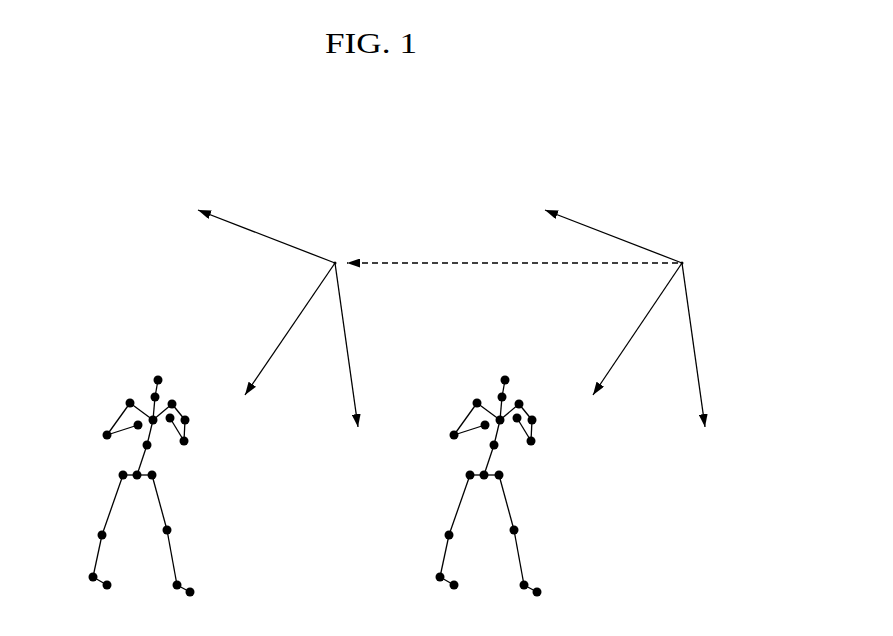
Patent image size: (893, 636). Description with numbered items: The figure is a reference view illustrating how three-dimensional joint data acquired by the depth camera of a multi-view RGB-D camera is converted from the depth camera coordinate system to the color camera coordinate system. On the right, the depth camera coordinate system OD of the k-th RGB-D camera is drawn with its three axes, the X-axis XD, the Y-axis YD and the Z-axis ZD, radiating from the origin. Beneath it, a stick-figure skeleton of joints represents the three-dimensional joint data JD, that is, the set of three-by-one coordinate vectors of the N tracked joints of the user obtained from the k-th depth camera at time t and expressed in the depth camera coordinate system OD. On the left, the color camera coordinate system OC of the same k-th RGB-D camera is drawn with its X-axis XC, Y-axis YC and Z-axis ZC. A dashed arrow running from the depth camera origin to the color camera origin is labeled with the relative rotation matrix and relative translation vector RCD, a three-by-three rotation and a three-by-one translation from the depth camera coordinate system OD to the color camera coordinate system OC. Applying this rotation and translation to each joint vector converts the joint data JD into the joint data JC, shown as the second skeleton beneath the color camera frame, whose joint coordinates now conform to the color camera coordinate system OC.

The X-axis of color camera coordinate system XC is at (266, 219).
The Y-axis of color camera coordinate system YC is at (368, 358).
The Z-axis of color camera coordinate system ZC is at (273, 345).
The color camera coordinate system OC is at (353, 244).
The X-axis of depth camera coordinate system XD is at (613, 219).
The Y-axis of depth camera coordinate system YD is at (715, 359).
The Z-axis of depth camera coordinate system ZD is at (620, 345).
The depth camera coordinate system OD is at (701, 244).
The relative rotation matrix and relative translation vector RCD is at (512, 244).
The 3D joint data in color camera coordinate system JC is at (121, 486).
The 3D joint data in depth camera coordinate system JD is at (467, 486).